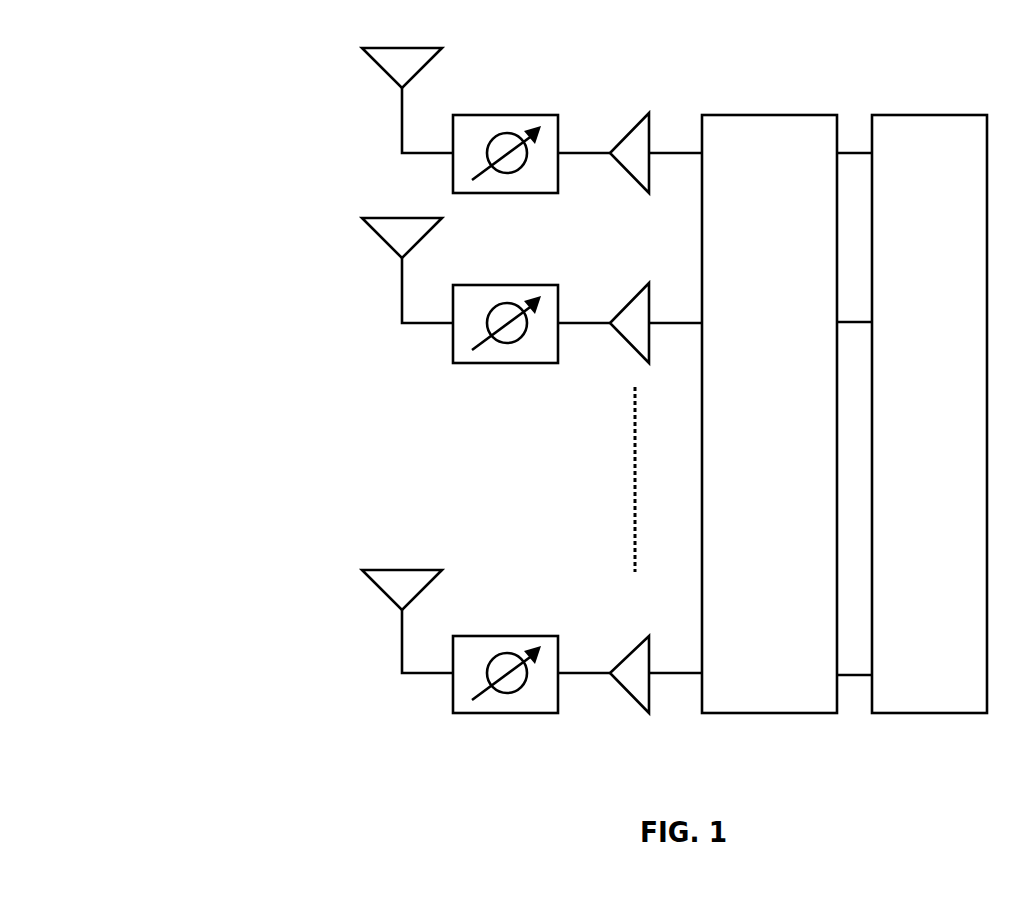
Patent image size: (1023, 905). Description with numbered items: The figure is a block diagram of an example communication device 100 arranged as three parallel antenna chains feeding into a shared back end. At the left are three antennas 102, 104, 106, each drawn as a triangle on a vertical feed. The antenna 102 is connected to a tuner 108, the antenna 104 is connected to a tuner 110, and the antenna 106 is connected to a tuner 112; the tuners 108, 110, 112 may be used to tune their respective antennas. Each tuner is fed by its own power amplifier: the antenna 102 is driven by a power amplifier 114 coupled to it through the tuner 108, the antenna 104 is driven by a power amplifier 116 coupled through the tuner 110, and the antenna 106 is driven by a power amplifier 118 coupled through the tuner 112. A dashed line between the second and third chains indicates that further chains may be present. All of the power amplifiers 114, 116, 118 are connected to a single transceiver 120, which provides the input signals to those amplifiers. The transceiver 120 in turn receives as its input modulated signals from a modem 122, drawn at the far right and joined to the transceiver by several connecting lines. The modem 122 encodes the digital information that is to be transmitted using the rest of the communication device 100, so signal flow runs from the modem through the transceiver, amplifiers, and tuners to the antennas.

The communication device 100 is at (574, 382).
The antenna 102 is at (375, 61).
The antenna 104 is at (378, 234).
The antenna 106 is at (378, 585).
The tuner 108 is at (510, 193).
The tuner 110 is at (510, 363).
The tuner 112 is at (510, 713).
The power amplifier 114 is at (632, 176).
The power amplifier 116 is at (631, 344).
The power amplifier 118 is at (634, 697).
The transceiver 120 is at (782, 713).
The modem 122 is at (947, 713).